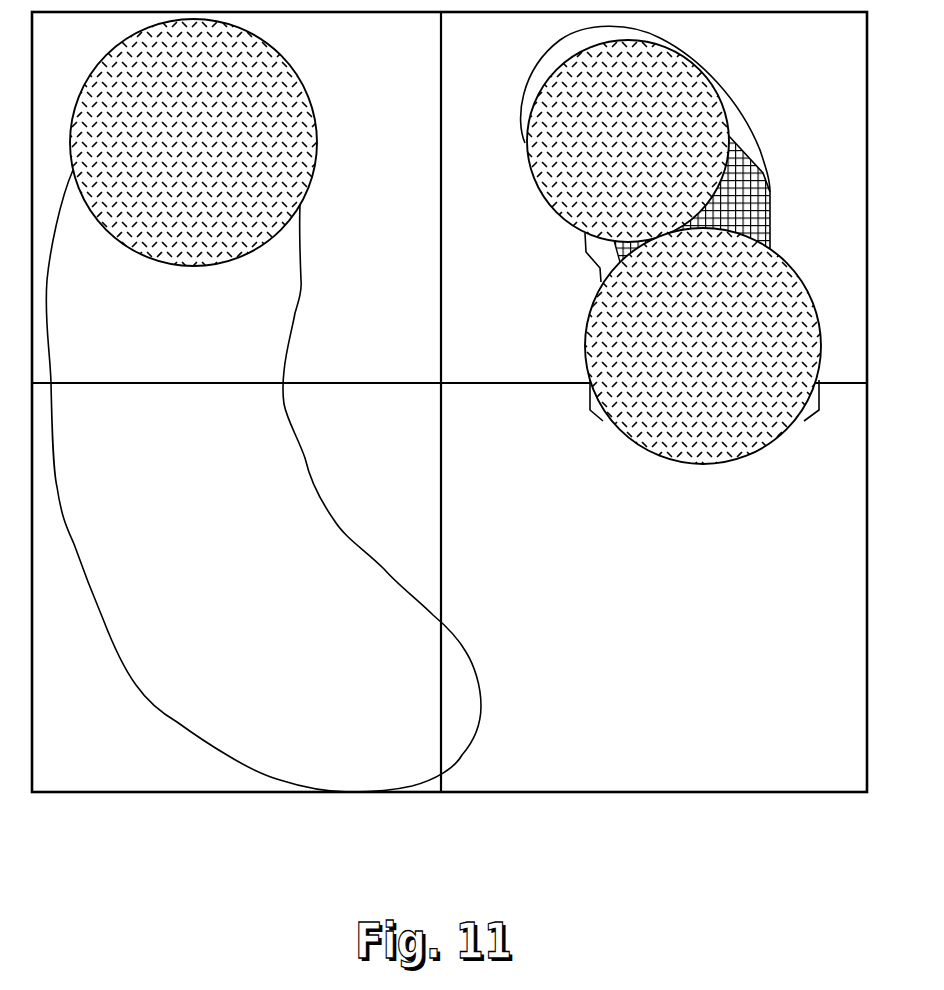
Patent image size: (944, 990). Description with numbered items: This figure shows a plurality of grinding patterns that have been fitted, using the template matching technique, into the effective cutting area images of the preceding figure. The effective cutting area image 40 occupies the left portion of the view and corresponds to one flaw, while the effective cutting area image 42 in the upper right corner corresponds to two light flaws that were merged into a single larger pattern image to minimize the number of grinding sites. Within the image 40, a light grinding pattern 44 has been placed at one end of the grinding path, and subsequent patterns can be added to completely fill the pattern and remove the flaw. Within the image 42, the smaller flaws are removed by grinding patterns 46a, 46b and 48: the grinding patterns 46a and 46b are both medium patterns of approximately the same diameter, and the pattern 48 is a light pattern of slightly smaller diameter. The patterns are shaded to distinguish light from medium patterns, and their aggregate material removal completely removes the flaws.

The effective cutting area image 40 is at (297, 306).
The effective cutting area image 42 is at (607, 421).
The grinding pattern 44 is at (297, 97).
The grinding pattern 46a is at (690, 65).
The grinding pattern 46b is at (590, 316).
The grinding pattern 48 is at (768, 193).